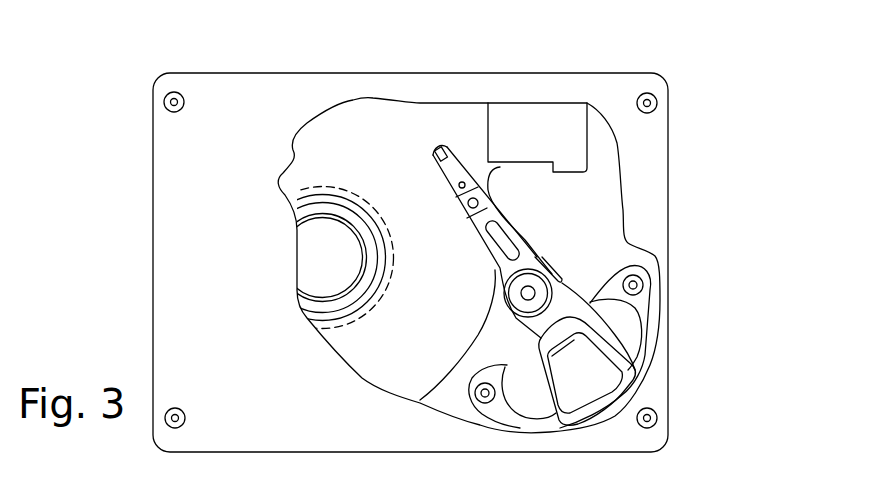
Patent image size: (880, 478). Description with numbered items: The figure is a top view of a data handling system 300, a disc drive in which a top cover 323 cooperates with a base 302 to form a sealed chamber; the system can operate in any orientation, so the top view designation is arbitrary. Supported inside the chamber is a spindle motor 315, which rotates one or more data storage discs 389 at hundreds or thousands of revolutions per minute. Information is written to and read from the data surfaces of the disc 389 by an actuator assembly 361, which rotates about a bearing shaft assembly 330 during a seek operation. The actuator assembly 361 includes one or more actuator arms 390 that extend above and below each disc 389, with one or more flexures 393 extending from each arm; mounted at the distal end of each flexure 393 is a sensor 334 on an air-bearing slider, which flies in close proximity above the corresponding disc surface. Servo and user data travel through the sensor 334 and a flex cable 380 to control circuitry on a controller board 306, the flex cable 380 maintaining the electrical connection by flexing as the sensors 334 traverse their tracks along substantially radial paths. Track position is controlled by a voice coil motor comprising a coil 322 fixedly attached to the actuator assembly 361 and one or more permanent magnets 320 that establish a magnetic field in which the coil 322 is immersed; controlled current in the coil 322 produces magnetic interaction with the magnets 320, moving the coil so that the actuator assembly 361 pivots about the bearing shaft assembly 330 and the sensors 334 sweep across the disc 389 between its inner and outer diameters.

The data handling system 300 is at (728, 70).
The base 302 is at (448, 122).
The controller board 306 is at (545, 128).
The spindle motor 315 is at (318, 257).
The permanent magnets 320 is at (613, 310).
The coil 322 is at (625, 384).
The top cover 323 is at (245, 115).
The bearing shaft assembly 330 is at (510, 272).
The sensor 334 is at (437, 148).
The actuator assembly 361 is at (527, 296).
The flex cable 380 is at (523, 235).
The data storage disc 389 is at (372, 357).
The actuator arm 390 is at (486, 251).
The flexure 393 is at (455, 172).